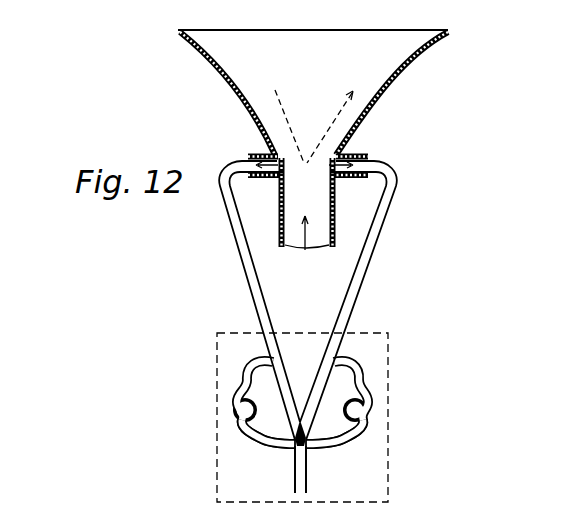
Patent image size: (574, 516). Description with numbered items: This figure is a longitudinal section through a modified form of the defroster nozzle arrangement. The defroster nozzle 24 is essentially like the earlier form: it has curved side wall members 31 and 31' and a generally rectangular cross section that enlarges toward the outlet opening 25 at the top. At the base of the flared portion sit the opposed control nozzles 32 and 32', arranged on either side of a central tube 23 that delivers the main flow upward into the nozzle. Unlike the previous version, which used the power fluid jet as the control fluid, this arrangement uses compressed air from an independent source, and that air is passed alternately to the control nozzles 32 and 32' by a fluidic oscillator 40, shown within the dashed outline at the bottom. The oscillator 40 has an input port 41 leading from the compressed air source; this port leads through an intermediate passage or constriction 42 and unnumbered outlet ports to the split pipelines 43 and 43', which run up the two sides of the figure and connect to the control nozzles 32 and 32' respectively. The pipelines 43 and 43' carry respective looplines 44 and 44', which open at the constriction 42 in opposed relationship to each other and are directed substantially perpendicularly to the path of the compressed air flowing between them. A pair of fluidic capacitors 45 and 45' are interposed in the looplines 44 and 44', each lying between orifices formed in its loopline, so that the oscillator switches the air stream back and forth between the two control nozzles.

The central inlet tube 23 is at (336, 208).
The defroster nozzle 24 is at (305, 83).
The outlet opening 25 is at (322, 30).
The curved side wall member 31 is at (392, 93).
The curved side wall member 31' is at (219, 93).
The control nozzle 32 is at (380, 159).
The control nozzle 32' is at (236, 145).
The fluidic oscillator 40 is at (389, 356).
The input port 41 is at (308, 478).
The intermediate passage or constriction 42 is at (296, 452).
The split pipeline 43 is at (361, 327).
The split pipeline 43' is at (248, 327).
The loopline 44 is at (366, 451).
The loopline 44' is at (238, 447).
The fluidic capacitor 45 is at (373, 402).
The fluidic capacitor 45' is at (237, 402).